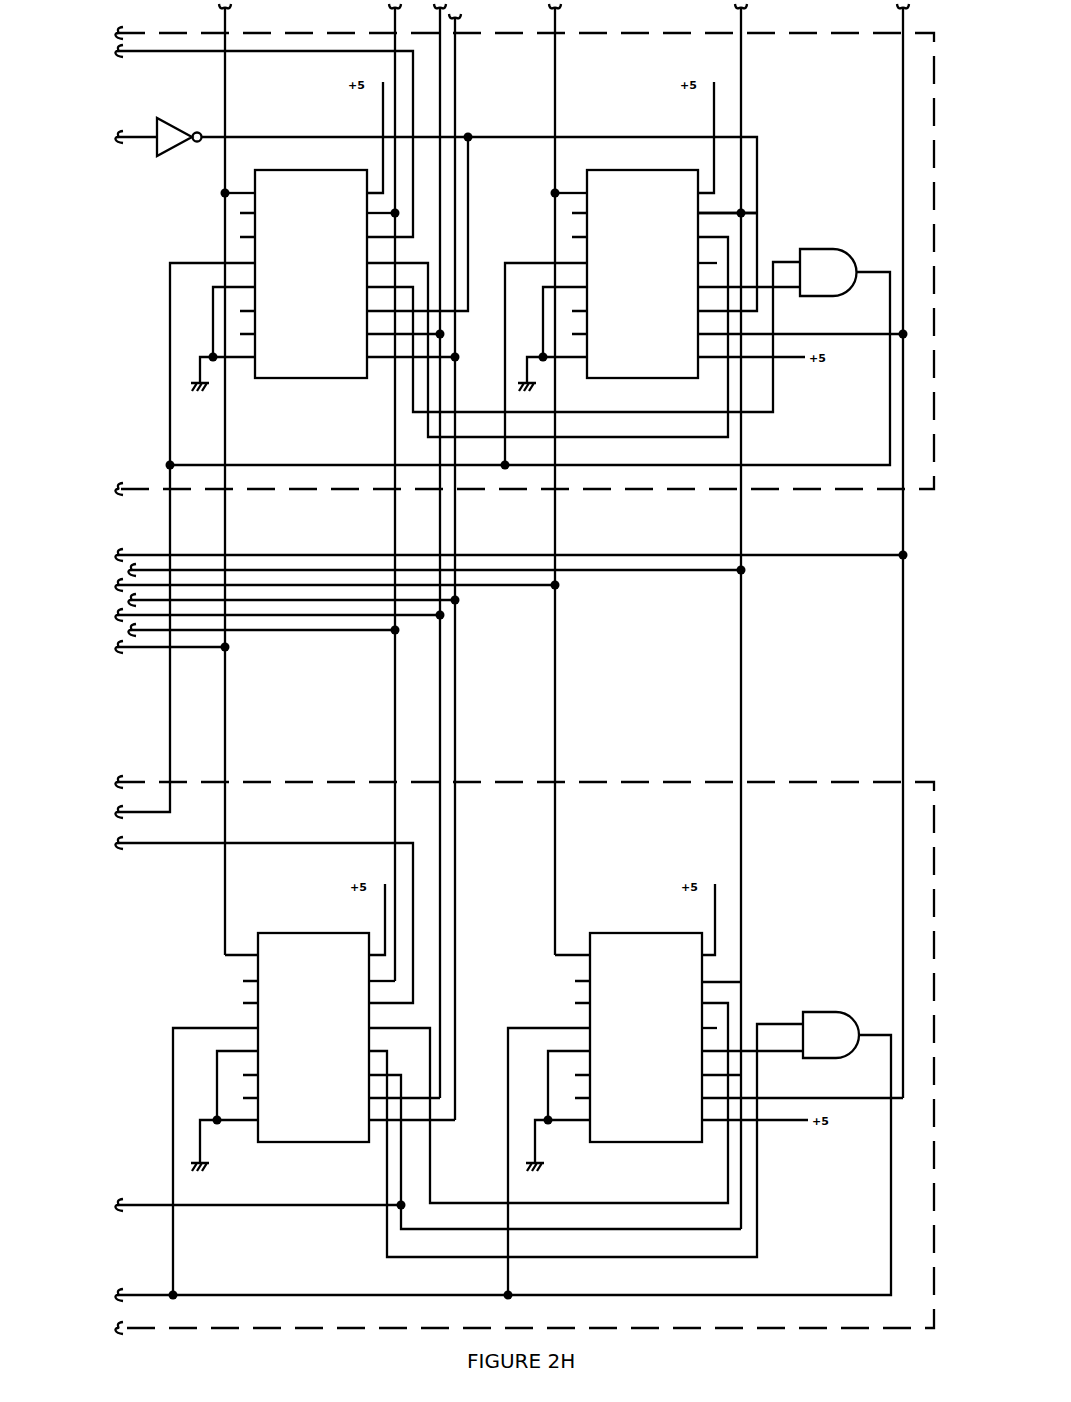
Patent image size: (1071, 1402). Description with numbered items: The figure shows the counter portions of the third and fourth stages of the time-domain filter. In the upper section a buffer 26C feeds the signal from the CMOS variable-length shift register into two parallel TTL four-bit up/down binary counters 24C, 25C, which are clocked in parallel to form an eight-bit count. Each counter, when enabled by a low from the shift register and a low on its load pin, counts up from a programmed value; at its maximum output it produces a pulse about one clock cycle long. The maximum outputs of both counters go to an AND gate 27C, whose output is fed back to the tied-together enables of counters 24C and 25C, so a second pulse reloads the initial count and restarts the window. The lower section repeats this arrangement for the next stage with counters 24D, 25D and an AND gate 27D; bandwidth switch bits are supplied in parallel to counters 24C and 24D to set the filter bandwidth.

The up/down binary counter 24C is at (275, 378).
The up/down binary counter 25C is at (670, 378).
The buffer 26C is at (152, 151).
The AND gate 27C is at (815, 249).
The up/down binary counter 24D is at (280, 1142).
The up/down binary counter 25D is at (620, 1142).
The AND gate 27D is at (843, 1012).